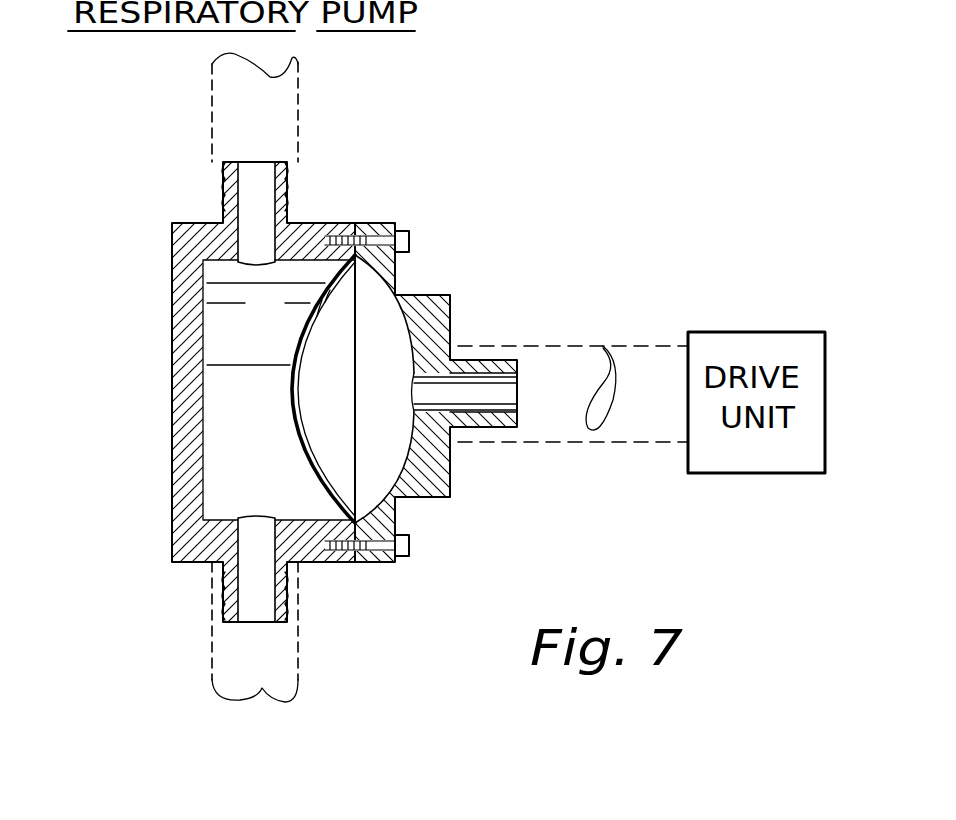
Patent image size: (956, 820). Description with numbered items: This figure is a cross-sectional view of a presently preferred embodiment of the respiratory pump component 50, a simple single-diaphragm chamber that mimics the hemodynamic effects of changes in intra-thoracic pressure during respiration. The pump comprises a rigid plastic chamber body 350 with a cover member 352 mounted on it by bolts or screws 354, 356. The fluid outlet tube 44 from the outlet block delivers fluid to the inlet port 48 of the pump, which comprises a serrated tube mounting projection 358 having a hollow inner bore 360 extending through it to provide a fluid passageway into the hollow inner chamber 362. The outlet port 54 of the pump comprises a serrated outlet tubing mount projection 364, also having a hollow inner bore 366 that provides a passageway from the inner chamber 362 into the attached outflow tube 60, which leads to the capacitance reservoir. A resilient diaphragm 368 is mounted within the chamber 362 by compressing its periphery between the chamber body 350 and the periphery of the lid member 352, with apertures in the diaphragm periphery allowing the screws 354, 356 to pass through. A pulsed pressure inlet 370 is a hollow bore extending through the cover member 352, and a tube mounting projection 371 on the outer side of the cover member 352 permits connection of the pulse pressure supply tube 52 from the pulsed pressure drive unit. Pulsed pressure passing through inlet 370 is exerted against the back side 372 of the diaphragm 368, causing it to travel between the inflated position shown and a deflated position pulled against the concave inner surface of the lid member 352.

The fluid outlet tube 44 is at (272, 692).
The inlet port 48 is at (271, 647).
The respiratory pump component 50 is at (404, 392).
The respiratory pump air supply tube 52 is at (592, 430).
The outlet port 54 is at (271, 148).
The tube 60 is at (214, 104).
The chamber body 350 is at (172, 534).
The cover member 352 is at (432, 293).
The bolt or screw 354 is at (411, 235).
The bolt or screw 356 is at (412, 545).
The serrated tube mounting projection 358 is at (291, 578).
The hollow inner bore 360 is at (240, 623).
The hollow inner chamber 362 is at (256, 351).
The serrated outlet tubing mount projection 364 is at (292, 182).
The hollow inner bore 366 is at (230, 165).
The resilient diaphragm 368 is at (292, 422).
The pulsed pressure inlet 370 is at (521, 388).
The tube mounting projection 371 is at (484, 430).
The back side of diaphragm 372 is at (308, 372).